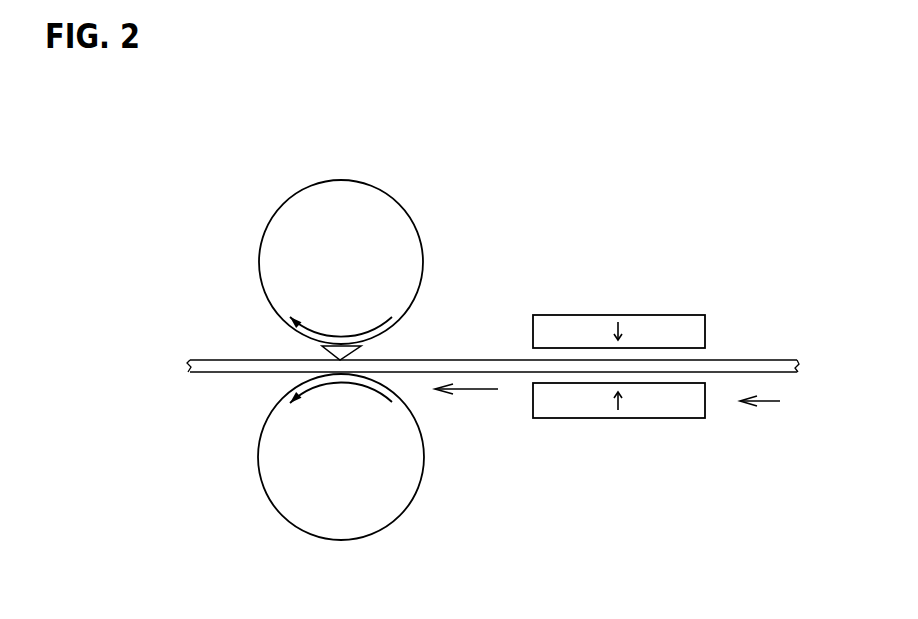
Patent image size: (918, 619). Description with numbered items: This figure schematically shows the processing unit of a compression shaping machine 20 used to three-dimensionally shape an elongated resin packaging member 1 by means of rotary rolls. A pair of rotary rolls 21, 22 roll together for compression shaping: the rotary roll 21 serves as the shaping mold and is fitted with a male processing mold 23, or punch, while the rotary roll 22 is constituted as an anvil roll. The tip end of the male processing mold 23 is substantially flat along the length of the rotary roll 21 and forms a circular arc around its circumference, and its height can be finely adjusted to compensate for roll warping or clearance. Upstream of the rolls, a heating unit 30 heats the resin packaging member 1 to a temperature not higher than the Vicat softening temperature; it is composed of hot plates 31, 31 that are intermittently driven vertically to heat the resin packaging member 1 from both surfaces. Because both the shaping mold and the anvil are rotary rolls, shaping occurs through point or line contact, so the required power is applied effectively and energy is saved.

The resin packaging member 1 is at (741, 353).
The compression shaping machine 20 is at (355, 337).
The rotary roll (shaping mold) 21 is at (410, 258).
The rotary roll (anvil roll) 22 is at (410, 471).
The male processing mold (punch) 23 is at (323, 355).
The heating unit 30 is at (619, 347).
The hot plate 31 is at (675, 315).